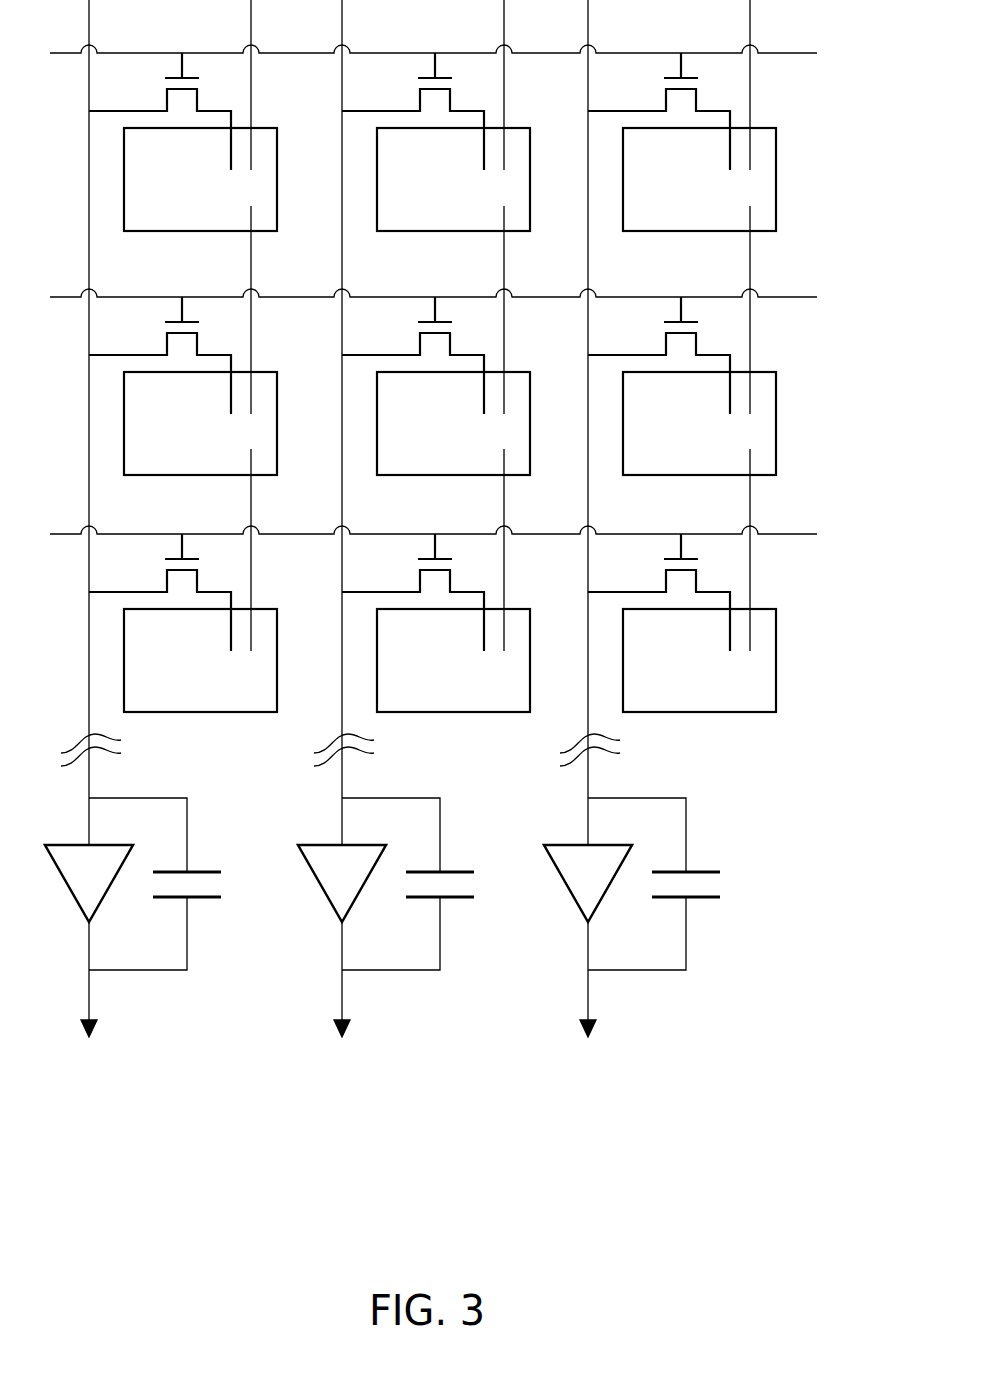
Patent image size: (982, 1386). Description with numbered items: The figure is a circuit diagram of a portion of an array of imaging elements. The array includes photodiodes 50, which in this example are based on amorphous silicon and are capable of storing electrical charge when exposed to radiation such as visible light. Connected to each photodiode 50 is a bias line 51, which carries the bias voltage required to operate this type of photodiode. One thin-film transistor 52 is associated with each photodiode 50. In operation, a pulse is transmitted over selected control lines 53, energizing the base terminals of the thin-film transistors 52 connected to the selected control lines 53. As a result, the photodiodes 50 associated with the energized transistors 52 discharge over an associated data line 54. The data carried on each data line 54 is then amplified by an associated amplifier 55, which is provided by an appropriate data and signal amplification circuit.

The photodiode 50 is at (764, 457).
The bias line 51 is at (752, 343).
The thin-film transistor 52 is at (663, 320).
The control line 53 is at (779, 297).
The data line 54 is at (588, 514).
The amplifier 55 is at (724, 835).